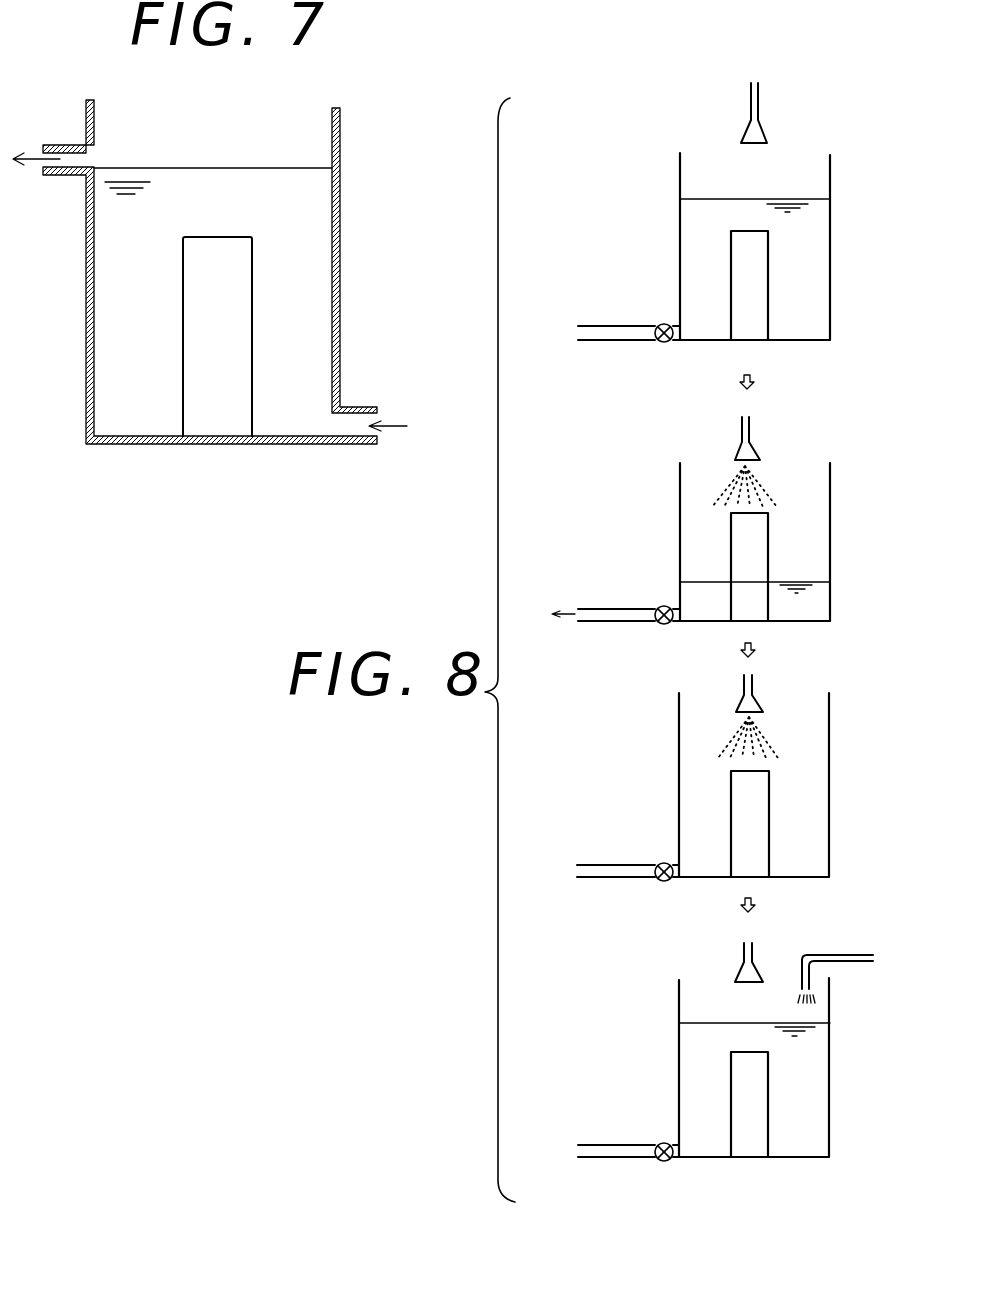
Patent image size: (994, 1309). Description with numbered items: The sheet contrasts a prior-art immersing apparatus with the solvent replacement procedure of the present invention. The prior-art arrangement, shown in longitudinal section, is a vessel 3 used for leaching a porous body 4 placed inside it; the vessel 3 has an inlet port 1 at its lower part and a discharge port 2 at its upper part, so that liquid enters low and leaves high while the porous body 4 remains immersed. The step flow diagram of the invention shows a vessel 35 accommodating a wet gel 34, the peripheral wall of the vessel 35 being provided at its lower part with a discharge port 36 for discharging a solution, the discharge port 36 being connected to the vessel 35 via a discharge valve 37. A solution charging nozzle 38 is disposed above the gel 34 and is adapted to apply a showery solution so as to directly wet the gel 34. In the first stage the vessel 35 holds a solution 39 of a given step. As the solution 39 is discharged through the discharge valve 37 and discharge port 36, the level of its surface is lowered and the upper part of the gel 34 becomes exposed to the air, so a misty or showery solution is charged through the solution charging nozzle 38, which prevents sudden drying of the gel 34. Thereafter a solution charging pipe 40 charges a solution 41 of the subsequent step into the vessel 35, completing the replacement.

In FIG. 7, the inlet port 1 is at (360, 422).
In FIG. 7, the discharge port 2 is at (58, 167).
In FIG. 7, the vessel 3 is at (340, 202).
In FIG. 7, the porous body 4 is at (225, 417).
In FIG. 8, the wet gel 34 is at (753, 321).
In FIG. 8, the vessel 35 is at (832, 176).
In FIG. 8, the discharge port 36 is at (596, 330).
In FIG. 8, the discharge valve 37 is at (662, 345).
In FIG. 8, the solution charging nozzle 38 is at (757, 113).
In FIG. 8, the solution of a given step 39 is at (812, 253).
In FIG. 8, the solution charging pipe 40 is at (855, 952).
In FIG. 8, the solution of the subsequent step 41 is at (807, 1090).